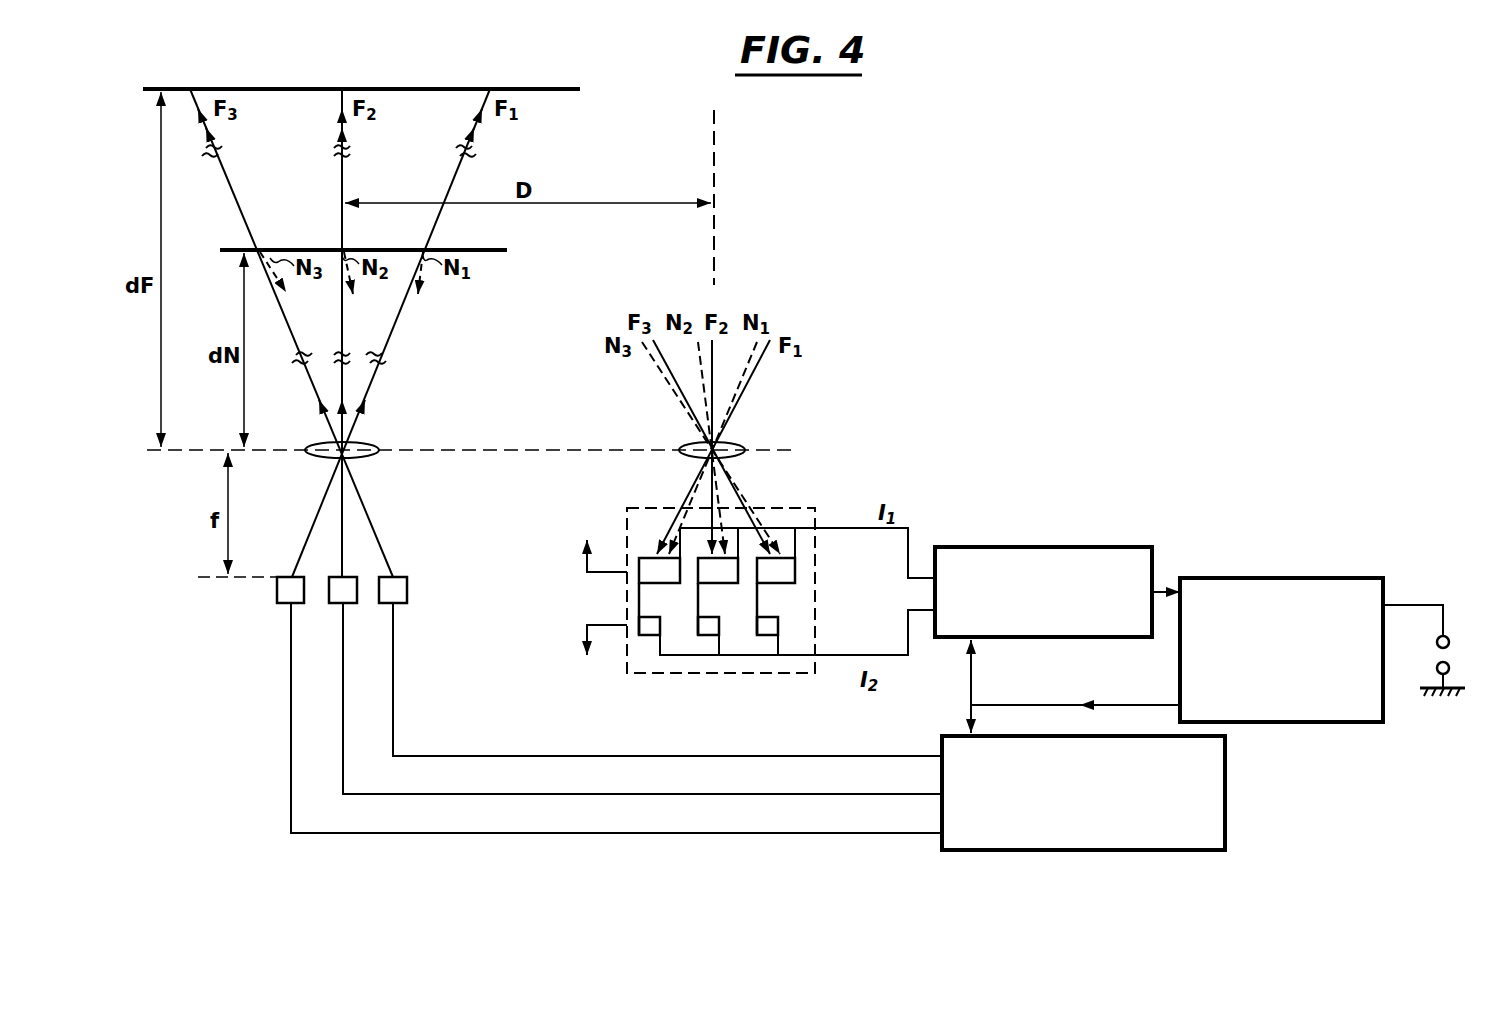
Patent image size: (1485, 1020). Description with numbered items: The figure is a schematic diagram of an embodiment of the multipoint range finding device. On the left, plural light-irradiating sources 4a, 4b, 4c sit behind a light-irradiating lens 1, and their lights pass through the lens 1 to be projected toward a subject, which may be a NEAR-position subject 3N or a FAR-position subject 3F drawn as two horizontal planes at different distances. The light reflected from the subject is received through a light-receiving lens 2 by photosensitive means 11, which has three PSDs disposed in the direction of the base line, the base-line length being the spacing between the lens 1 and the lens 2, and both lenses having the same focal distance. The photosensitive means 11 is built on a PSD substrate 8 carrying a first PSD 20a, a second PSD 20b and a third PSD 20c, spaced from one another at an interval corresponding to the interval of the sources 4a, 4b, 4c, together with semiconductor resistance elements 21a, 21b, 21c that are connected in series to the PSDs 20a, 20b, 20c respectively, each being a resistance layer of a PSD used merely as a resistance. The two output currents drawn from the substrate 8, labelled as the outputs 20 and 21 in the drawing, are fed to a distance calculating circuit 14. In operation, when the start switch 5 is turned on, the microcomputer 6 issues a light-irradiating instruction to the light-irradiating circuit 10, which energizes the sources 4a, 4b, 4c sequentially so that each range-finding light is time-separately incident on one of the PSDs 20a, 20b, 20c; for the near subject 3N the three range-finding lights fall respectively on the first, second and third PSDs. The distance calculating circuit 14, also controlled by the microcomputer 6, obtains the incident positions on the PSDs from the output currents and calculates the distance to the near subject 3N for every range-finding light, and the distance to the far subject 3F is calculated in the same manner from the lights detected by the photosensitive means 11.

The light-irradiating lens 1 is at (365, 446).
The light-receiving lens 2 is at (744, 450).
The FAR-position subject 3F is at (346, 92).
The NEAR-position subject 3N is at (345, 252).
The light-irradiating source 4a is at (278, 604).
The light-irradiating source 4b is at (334, 602).
The light-irradiating source 4c is at (404, 601).
The start switch 5 is at (1436, 642).
The microcomputer 6 is at (1290, 578).
The PSD substrate 8 is at (664, 674).
The light-irradiation circuit 10 is at (1225, 797).
The photosensitive means 11 is at (788, 527).
The distance calculating circuit 14 is at (993, 547).
The first output terminal 20 is at (599, 543).
The second output terminal 21 is at (599, 655).
The first PSD 20a is at (663, 596).
The second PSD 20b is at (722, 596).
The third PSD 20c is at (780, 596).
The semiconductor resistance element 21a is at (671, 637).
The semiconductor resistance element 21b is at (731, 637).
The semiconductor resistance element 21c is at (778, 625).